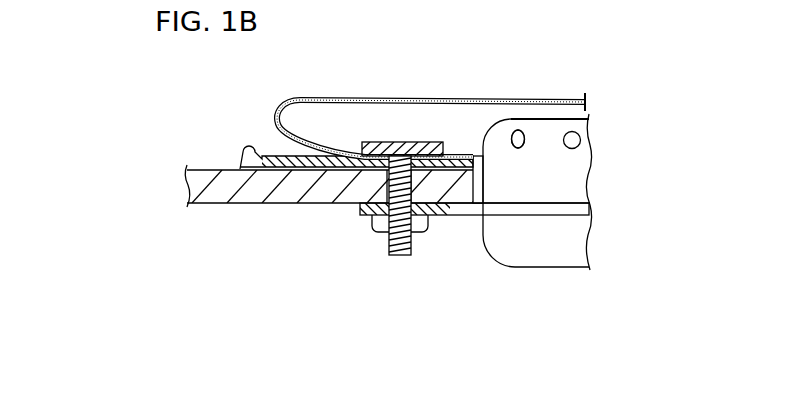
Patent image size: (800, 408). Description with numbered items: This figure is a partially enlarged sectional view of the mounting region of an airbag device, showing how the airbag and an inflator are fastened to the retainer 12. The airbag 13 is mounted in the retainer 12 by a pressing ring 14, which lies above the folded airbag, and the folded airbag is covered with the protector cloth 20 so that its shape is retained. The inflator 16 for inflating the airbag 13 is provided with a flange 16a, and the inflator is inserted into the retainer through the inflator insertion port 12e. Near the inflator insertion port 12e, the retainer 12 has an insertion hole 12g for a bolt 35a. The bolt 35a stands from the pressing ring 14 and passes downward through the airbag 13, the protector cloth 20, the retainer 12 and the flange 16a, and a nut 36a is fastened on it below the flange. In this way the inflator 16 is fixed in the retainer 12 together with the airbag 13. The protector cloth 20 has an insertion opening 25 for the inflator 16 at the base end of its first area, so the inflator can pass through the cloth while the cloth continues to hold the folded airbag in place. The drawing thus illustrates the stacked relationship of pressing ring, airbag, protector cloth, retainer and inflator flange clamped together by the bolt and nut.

The retainer 12 is at (206, 158).
The inflator insertion port 12e is at (477, 181).
The insertion hole 12g is at (386, 182).
The airbag 13 is at (560, 92).
The pressing ring 14 is at (363, 141).
The inflator 16 is at (578, 184).
The flange 16a is at (560, 215).
The protector cloth 20 is at (268, 143).
The insertion opening 25 is at (485, 165).
The bolt 35a is at (388, 248).
The nut 36a is at (372, 217).